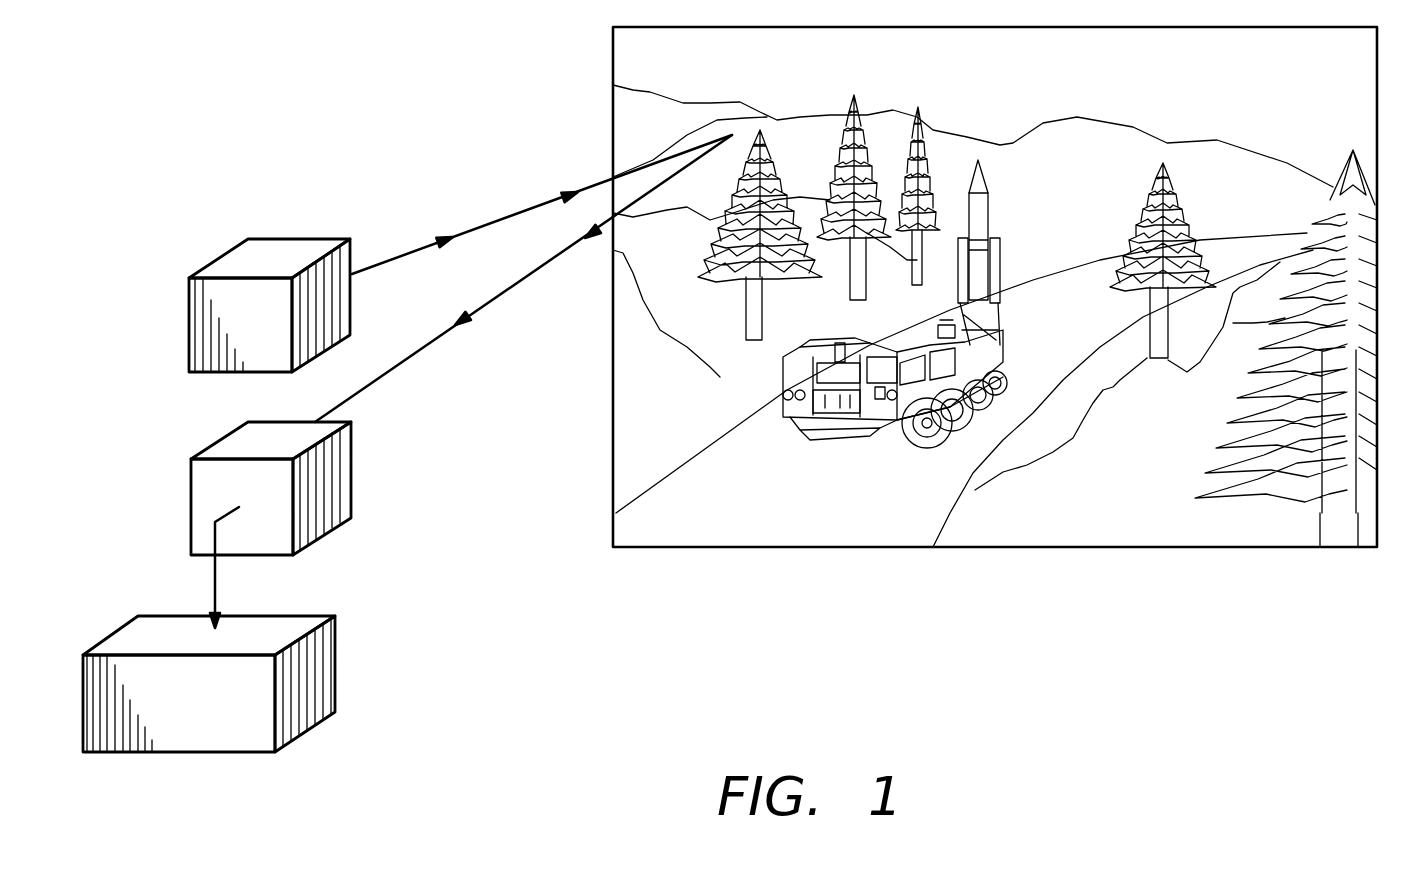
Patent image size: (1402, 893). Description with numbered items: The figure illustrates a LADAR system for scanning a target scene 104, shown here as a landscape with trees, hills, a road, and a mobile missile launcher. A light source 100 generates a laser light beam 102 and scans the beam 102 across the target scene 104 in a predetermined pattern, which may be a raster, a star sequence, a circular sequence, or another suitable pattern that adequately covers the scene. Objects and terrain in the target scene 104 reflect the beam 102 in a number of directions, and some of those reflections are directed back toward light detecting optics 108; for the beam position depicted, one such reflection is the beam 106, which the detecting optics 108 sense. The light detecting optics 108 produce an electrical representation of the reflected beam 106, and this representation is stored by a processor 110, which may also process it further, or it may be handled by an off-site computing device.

The light source 100 is at (222, 256).
The laser light beam 102 is at (510, 216).
The target scene 104 is at (1200, 548).
The reflected beam 106 is at (497, 297).
The light detecting optics 108 is at (222, 439).
The processor 110 is at (120, 629).